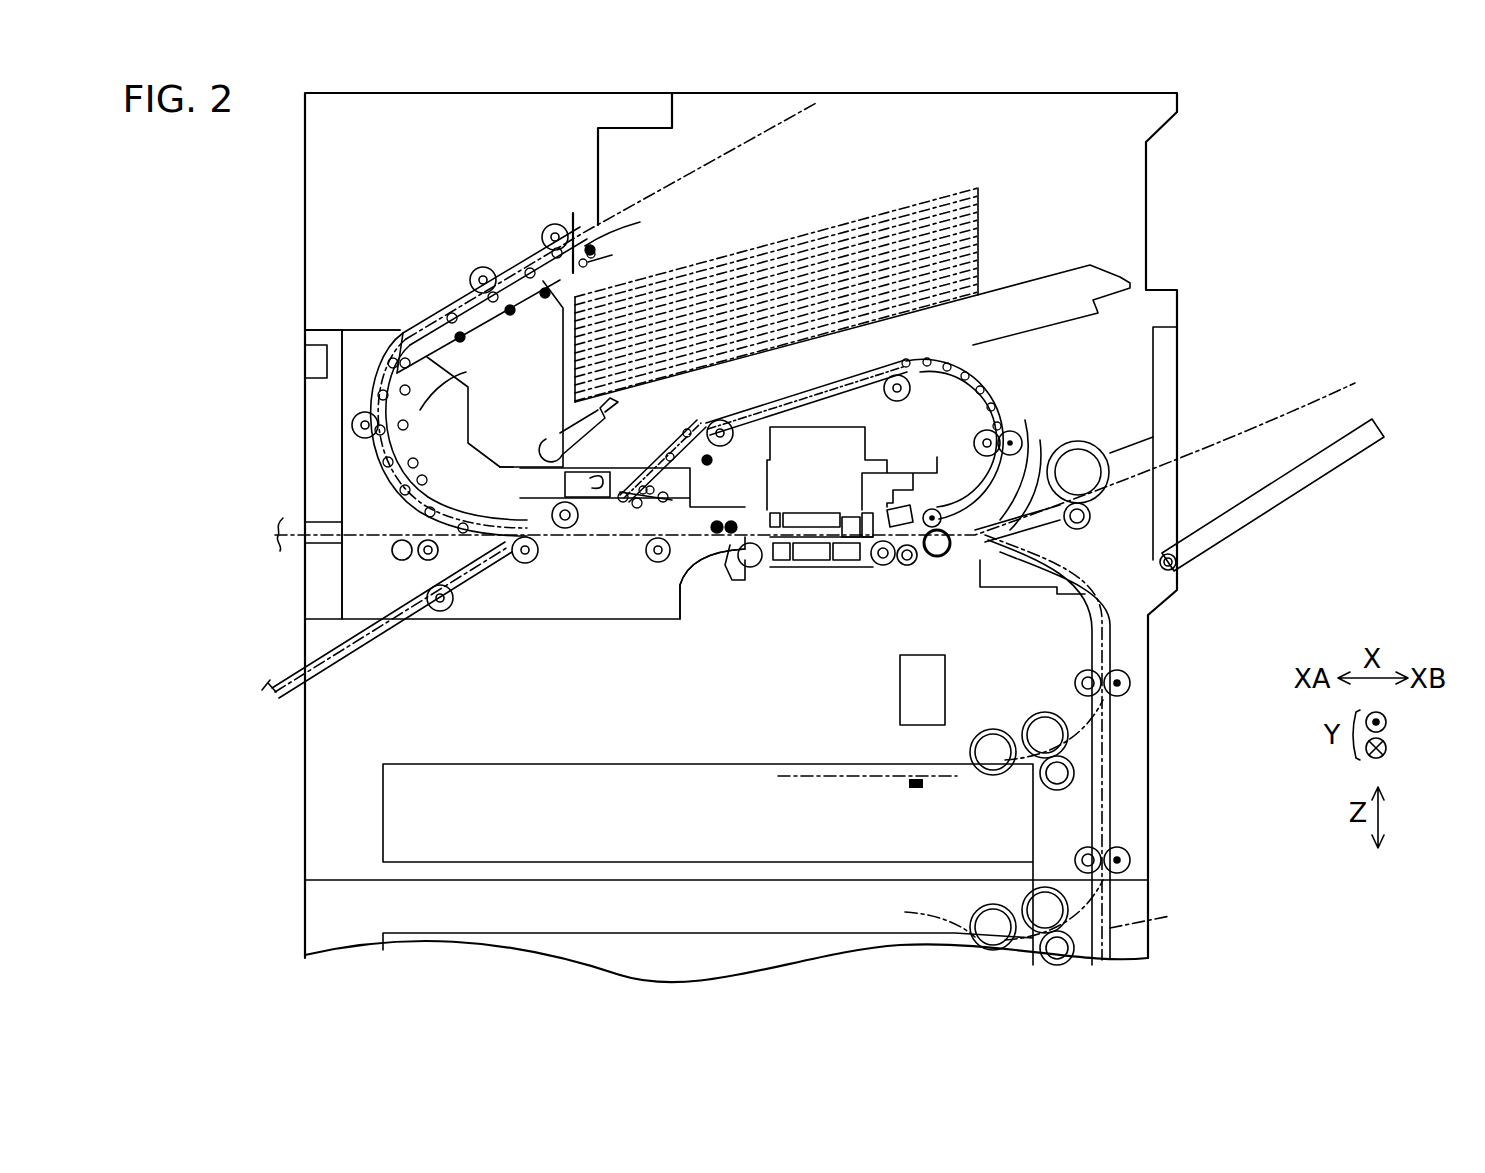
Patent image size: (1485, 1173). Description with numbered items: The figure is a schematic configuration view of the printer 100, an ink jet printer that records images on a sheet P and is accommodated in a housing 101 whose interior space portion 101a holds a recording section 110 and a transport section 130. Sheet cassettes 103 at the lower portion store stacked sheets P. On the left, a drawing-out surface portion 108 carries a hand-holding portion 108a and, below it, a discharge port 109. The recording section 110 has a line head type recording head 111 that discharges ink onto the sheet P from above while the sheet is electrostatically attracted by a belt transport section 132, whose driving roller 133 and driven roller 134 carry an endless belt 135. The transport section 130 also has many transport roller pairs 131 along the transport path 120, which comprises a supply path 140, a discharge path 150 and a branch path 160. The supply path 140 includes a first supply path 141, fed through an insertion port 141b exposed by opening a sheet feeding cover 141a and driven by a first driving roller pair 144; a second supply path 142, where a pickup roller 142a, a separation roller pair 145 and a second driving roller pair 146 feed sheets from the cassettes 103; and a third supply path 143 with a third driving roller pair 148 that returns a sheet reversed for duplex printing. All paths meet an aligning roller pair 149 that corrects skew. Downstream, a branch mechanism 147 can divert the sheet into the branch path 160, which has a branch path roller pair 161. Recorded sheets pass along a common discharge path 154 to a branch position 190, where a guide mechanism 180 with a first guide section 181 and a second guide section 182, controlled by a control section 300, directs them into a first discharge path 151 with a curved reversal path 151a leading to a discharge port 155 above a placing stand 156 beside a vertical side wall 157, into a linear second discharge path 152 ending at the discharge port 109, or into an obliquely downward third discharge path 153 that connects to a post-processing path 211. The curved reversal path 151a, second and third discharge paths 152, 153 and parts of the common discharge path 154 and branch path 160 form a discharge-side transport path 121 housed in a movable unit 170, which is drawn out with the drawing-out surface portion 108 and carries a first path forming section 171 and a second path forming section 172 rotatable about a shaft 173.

The printer 100 is at (1213, 118).
The housing 101 is at (1148, 176).
The space portion 101a is at (708, 420).
The sheet cassette 103 is at (680, 760).
The drawing-out surface portion 108 is at (308, 425).
The hand-holding portion 108a is at (308, 356).
The discharge port 109 is at (300, 520).
The recording section 110 is at (860, 452).
The recording head 111 is at (808, 515).
The transport path 120 is at (708, 596).
The discharge-side transport path 121 is at (350, 354).
The transport section 130 is at (787, 642).
The transport roller pair 131 is at (550, 224).
The belt transport section 132 is at (829, 600).
The driving roller 133 is at (877, 567).
The driven roller 134 is at (767, 568).
The belt 135 is at (850, 567).
The supply path 140 is at (1069, 394).
The first supply path 141 is at (1023, 503).
The sheet feeding cover 141a is at (1275, 507).
The insertion port 141b is at (1178, 358).
The second supply path 142 is at (1118, 635).
The pickup roller 142a is at (992, 728).
The third supply path 143 is at (780, 405).
The first driving roller pair 144 is at (1090, 442).
The separation roller pair 145 is at (1042, 712).
The second driving roller pair 146 is at (1131, 683).
The branch mechanism 147 is at (684, 512).
The third driving roller pair 148 is at (1015, 430).
The aligning roller pair 149 is at (982, 566).
The discharge path 150 is at (558, 562).
The first discharge path 151 is at (436, 325).
The curved reversal path 151a is at (395, 345).
The second discharge path 152 is at (380, 492).
The third discharge path 153 is at (405, 615).
The common discharge path 154 is at (630, 535).
The discharge port 155 is at (640, 222).
The placing stand 156 is at (1042, 270).
The vertical side wall 157 is at (563, 345).
The branch path 160 is at (466, 372).
The branch path roller pair 161 is at (570, 540).
The movable unit 170 is at (392, 325).
The first path forming section 171 is at (513, 467).
The second path forming section 172 is at (495, 465).
The shaft 173 is at (608, 400).
The guide mechanism 180 is at (511, 614).
The first guide section 181 is at (453, 597).
The second guide section 182 is at (412, 560).
The branch position 190 is at (515, 524).
The post-processing path 211 is at (332, 680).
The control section 300 is at (942, 655).
The sheet P is at (712, 152).